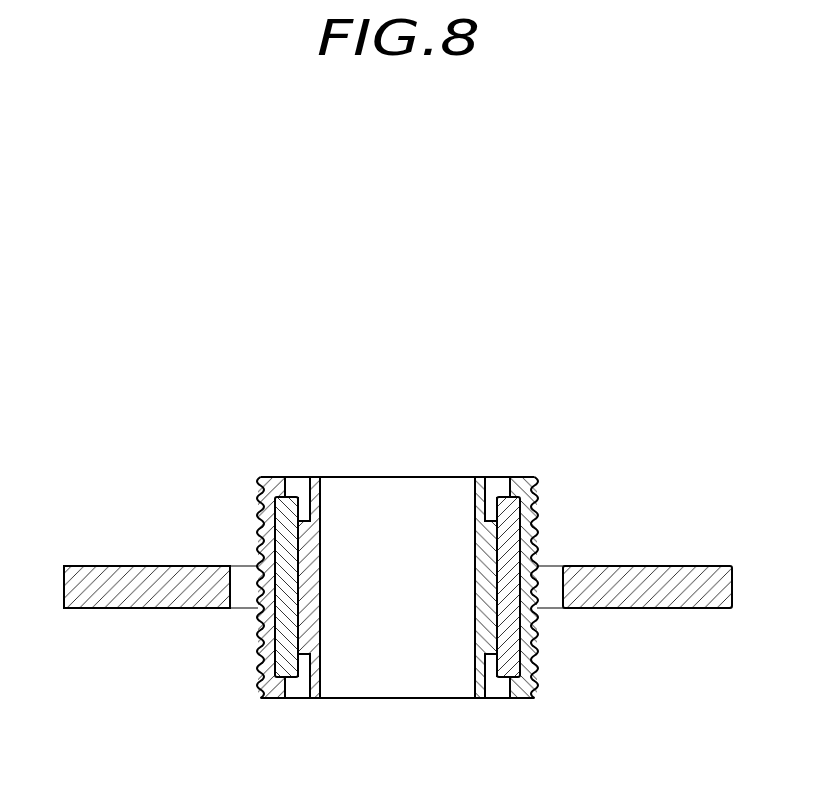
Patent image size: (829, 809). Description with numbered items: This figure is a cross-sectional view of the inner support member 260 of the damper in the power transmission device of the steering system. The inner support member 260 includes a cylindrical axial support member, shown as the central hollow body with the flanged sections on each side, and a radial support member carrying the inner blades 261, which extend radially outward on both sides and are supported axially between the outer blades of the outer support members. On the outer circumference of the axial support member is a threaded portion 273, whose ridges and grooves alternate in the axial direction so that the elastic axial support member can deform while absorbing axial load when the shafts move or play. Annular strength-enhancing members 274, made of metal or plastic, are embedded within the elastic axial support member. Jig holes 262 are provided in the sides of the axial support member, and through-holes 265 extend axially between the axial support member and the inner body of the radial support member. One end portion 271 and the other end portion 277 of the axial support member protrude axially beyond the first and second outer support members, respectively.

The inner support member 260 is at (141, 401).
The inner blades 261 is at (660, 572).
The jig holes 262 is at (307, 488).
The through-holes 265 is at (232, 587).
The one end portion 271 is at (520, 477).
The threaded portion 273 is at (538, 502).
The strength-enhancing members 274 is at (283, 632).
The other end portion 277 is at (523, 698).